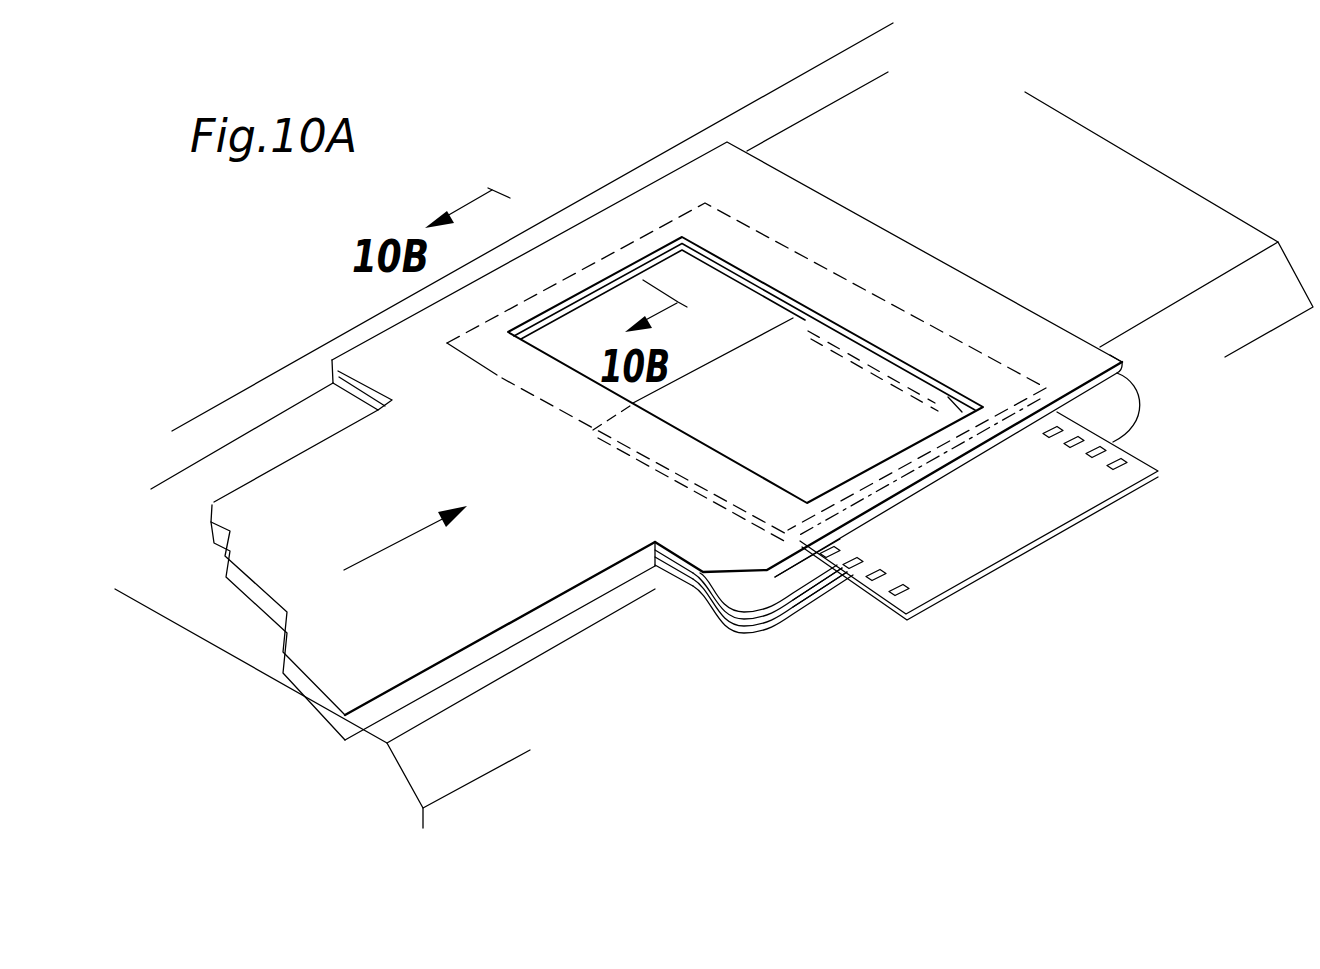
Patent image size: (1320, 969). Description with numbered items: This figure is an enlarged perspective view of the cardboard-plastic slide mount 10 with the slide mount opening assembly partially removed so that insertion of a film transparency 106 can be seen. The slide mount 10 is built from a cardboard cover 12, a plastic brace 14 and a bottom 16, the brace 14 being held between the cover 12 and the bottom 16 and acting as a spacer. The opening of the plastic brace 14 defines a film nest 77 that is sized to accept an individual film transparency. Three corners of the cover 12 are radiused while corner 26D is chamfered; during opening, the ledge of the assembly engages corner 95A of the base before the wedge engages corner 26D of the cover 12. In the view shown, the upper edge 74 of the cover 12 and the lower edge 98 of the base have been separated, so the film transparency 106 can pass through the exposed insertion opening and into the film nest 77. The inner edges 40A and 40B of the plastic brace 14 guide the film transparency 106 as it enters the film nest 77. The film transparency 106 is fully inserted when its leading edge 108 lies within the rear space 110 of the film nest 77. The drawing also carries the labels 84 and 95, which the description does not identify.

The slide mount 10 is at (889, 189).
The cardboard cover 12 is at (992, 302).
The plastic brace 14 is at (737, 597).
The bottom 16 is at (686, 594).
The chamfered corner 26D is at (1122, 362).
The inner edge of plastic brace 40A is at (540, 405).
The inner edge of plastic brace 40B is at (807, 263).
The upper edge of cover 74 is at (1073, 393).
The film nest 77 is at (733, 243).
The conductor layer 84 is at (793, 568).
The flex bend 95 is at (733, 632).
The corner of base 95A is at (1127, 413).
The lower edge of base 98 is at (810, 603).
The film transparency 106 is at (1031, 541).
The leading edge of film transparency 108 is at (712, 355).
The rear space of film nest 110 is at (645, 243).